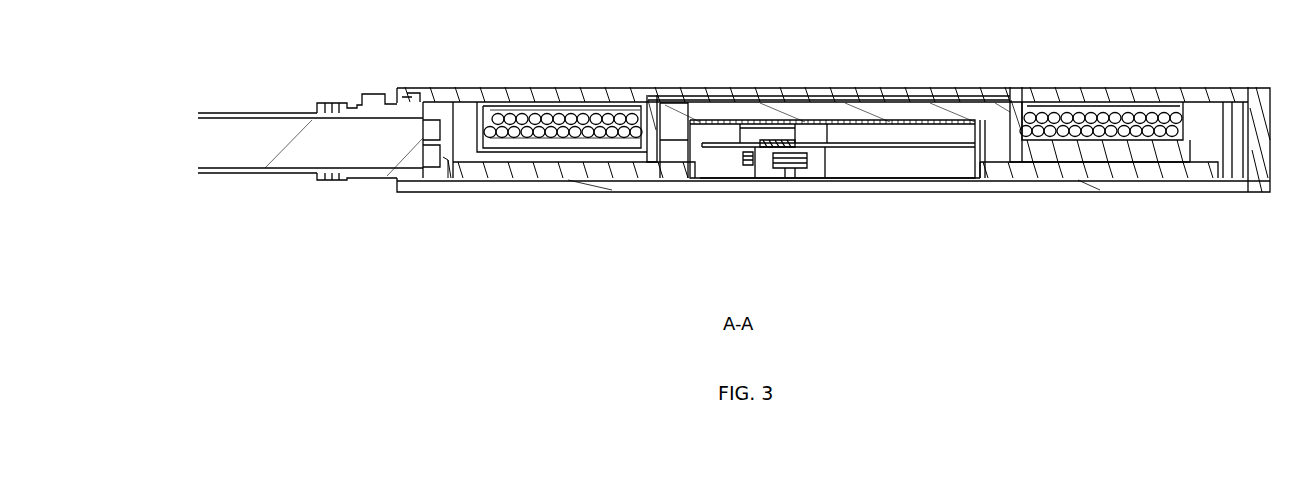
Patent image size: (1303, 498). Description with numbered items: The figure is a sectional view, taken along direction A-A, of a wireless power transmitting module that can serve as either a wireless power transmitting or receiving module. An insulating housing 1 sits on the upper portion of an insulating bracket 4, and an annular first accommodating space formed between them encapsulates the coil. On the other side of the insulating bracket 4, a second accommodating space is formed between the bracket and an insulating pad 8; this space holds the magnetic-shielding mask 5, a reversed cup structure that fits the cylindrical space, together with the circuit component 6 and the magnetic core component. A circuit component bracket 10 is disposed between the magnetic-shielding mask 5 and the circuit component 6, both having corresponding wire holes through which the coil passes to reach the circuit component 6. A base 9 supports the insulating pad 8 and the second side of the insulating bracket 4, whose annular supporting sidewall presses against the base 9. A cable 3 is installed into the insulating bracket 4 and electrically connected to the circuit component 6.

The insulating housing 1 is at (992, 85).
The cable 3 is at (278, 103).
The insulating bracket 4 is at (813, 98).
The magnetic-shielding mask 5 is at (737, 95).
The circuit component 6 is at (872, 135).
The insulating pad 8 is at (630, 175).
The base 9 is at (926, 185).
The circuit component bracket 10 is at (693, 110).